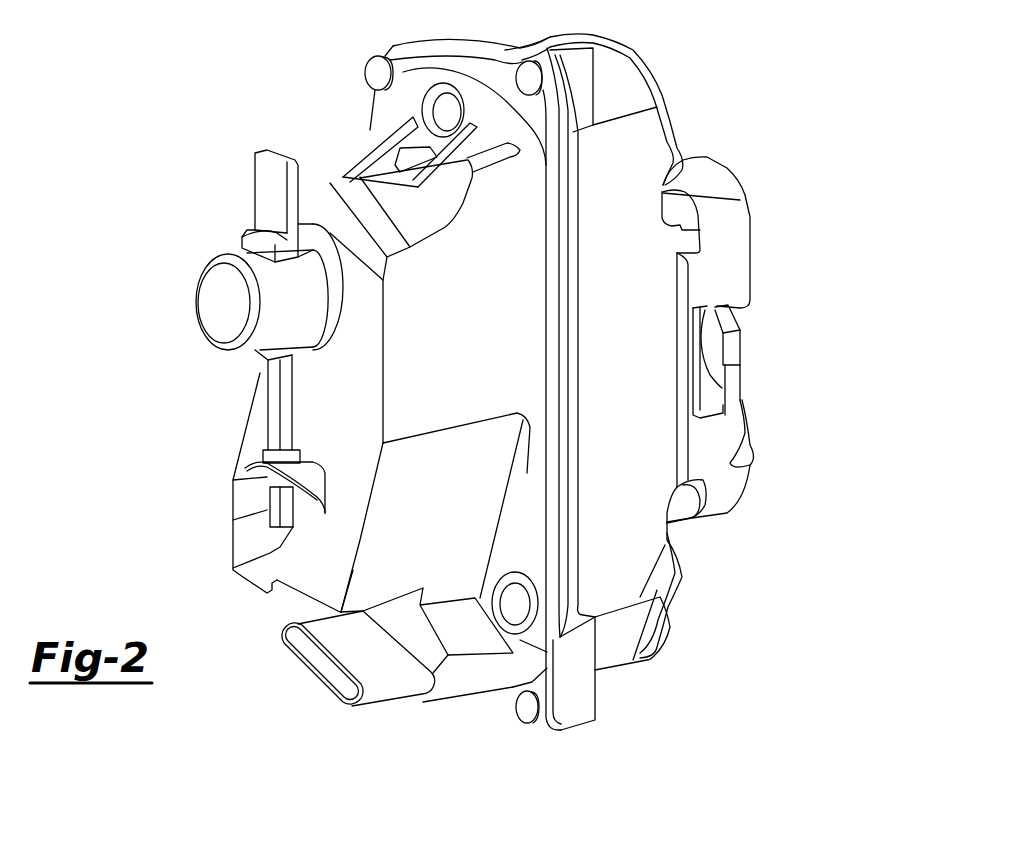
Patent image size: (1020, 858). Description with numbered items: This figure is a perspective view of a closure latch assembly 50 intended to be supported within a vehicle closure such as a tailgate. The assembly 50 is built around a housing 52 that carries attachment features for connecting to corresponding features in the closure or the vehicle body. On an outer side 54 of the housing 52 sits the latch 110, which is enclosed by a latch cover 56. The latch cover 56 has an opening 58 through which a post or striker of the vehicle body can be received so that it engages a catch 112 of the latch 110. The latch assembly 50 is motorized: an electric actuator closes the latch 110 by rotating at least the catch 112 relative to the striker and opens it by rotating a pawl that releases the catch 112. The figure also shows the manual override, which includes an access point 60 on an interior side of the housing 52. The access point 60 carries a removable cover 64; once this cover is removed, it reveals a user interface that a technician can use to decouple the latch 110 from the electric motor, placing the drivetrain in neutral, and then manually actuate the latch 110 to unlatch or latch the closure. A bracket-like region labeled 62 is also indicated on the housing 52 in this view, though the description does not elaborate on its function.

The latch assembly 50 is at (748, 140).
The housing 52 is at (641, 296).
The outer side 54 is at (667, 535).
The latch cover 56 is at (732, 490).
The opening 58 is at (737, 442).
The access point 60 is at (181, 263).
The bracket 62 is at (203, 565).
The removable cover 64 is at (222, 303).
The latch 110 is at (760, 341).
The catch 112 is at (732, 380).